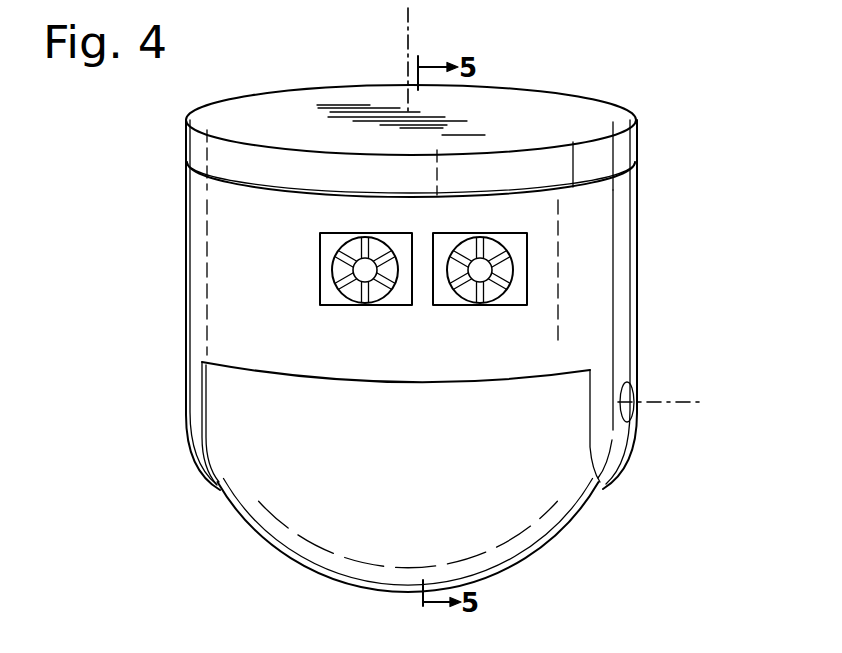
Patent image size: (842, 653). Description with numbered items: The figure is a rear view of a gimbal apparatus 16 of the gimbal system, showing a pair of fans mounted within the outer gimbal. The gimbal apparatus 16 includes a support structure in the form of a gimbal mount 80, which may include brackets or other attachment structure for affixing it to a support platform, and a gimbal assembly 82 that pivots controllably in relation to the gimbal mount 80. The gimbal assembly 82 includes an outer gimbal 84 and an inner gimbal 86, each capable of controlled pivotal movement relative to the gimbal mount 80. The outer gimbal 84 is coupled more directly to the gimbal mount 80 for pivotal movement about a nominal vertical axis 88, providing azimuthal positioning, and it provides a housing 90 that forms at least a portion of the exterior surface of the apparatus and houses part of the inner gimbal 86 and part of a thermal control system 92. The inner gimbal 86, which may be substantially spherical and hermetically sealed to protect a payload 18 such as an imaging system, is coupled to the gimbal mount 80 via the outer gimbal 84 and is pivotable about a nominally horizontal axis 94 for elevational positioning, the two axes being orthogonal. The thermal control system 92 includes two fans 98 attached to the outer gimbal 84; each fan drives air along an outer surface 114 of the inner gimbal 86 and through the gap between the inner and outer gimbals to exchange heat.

The gimbal apparatus 16 is at (134, 203).
The payload 18 is at (523, 517).
The gimbal mount 80 is at (187, 143).
The gimbal assembly 82 is at (153, 471).
The outer gimbal 84 is at (180, 301).
The inner gimbal 86 is at (285, 562).
The vertical axis 88 is at (404, 42).
The housing 90 is at (190, 352).
The thermal control system 92 is at (350, 326).
The horizontal axis 94 is at (697, 404).
The fans 98 is at (455, 303).
The outer surface 114 is at (405, 450).